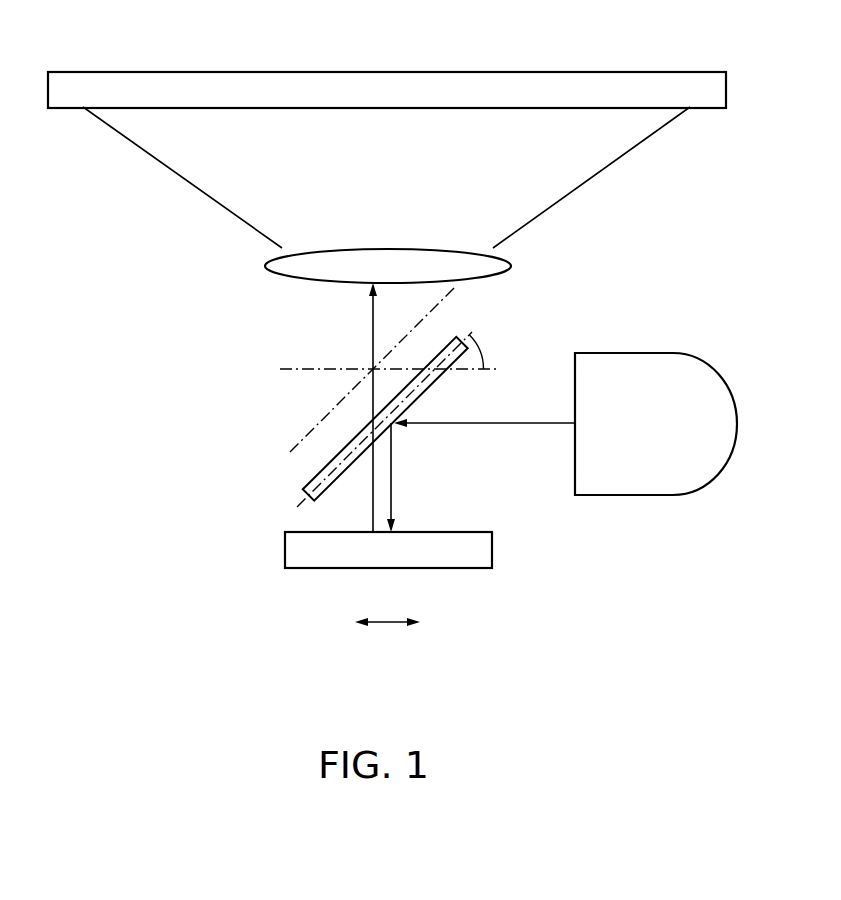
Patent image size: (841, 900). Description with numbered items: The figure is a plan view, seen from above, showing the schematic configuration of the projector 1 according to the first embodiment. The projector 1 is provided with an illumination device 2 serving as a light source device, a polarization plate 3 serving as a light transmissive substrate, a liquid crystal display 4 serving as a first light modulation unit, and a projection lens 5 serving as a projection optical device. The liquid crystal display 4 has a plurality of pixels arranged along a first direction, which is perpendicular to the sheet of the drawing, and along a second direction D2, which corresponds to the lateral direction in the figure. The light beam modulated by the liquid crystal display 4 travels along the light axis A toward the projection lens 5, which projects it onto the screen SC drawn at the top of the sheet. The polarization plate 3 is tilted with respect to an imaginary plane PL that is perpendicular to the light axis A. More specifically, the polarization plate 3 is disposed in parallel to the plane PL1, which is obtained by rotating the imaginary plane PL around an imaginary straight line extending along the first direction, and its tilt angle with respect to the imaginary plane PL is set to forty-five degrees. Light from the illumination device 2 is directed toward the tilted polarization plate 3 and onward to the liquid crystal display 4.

The projector 1 is at (208, 626).
The illumination device 2 is at (658, 353).
The polarization plate 3 is at (433, 385).
The liquid crystal display (LCD) 4 is at (492, 550).
The projection lens 5 is at (512, 267).
The screen SC is at (90, 82).
The imaginary plane PL is at (298, 371).
The plane PL1 is at (288, 451).
The light axis A is at (373, 495).
The second direction D2 is at (387, 607).